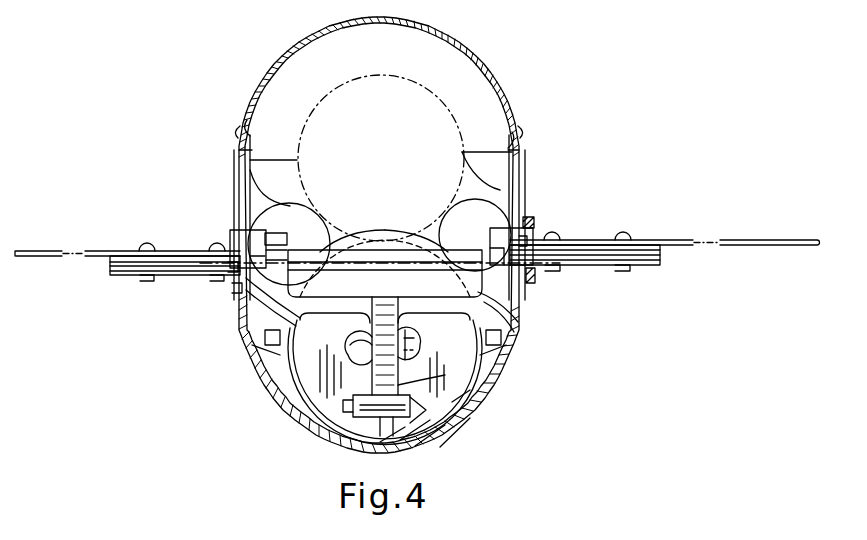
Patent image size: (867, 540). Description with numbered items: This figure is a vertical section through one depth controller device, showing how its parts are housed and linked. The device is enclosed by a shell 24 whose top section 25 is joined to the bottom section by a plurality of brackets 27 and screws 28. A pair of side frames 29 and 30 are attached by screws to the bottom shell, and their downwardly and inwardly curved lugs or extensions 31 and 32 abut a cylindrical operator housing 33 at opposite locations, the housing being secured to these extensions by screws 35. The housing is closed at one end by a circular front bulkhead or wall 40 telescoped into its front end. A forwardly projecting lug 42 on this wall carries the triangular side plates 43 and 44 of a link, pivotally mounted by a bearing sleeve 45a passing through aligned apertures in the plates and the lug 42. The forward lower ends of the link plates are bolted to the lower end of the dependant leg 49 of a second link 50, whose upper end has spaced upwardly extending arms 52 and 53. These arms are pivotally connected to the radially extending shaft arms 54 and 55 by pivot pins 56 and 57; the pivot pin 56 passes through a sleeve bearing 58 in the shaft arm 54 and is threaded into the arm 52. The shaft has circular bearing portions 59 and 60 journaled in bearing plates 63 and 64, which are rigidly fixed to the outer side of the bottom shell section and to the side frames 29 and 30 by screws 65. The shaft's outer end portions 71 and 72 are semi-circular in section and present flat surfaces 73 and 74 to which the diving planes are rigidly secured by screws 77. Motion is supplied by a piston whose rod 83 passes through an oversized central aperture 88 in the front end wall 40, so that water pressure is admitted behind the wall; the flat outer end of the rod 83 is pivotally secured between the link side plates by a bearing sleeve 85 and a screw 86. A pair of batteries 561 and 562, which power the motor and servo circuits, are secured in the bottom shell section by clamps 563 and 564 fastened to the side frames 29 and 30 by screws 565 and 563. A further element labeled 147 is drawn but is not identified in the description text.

The shell 24 is at (497, 56).
The top section 25 is at (502, 81).
The brackets 27 is at (250, 138).
The screws 28 is at (237, 136).
The side frame 29 is at (246, 306).
The side frame 30 is at (516, 292).
The lug or extension 31 is at (280, 355).
The lug or extension 32 is at (504, 350).
The operator housing 33 is at (478, 392).
The screws 35 is at (275, 333).
The front bulkhead or wall 40 is at (452, 431).
The lug 42 is at (382, 437).
The side plate 43 is at (372, 381).
The side plate 44 is at (406, 366).
The bearing sleeve 45a is at (420, 388).
The dependant leg 49 is at (365, 352).
The link 50 is at (330, 330).
The arm 52 is at (330, 226).
The arm 53 is at (470, 232).
The shaft arm 54 is at (264, 240).
The shaft arm 55 is at (500, 228).
The pivot pin 56 is at (234, 240).
The pivot pin 57 is at (313, 292).
The sleeve bearing 58 is at (282, 234).
The bearing portion 59 is at (243, 215).
The bearing portion 60 is at (528, 216).
The bearing plate 63 is at (233, 292).
The bearing plate 64 is at (536, 280).
The screws 65 is at (535, 230).
The outer end portion 71 is at (118, 272).
The outer end portion 72 is at (600, 268).
The flat surface 73 is at (124, 250).
The flat surface 74 is at (590, 236).
The screws 77 is at (160, 243).
The rod 83 is at (410, 334).
The bearing sleeve 85 is at (420, 352).
The screw 86 is at (416, 342).
The central aperture 88 is at (362, 338).
The bottom web 147 is at (405, 445).
The battery 561 is at (343, 240).
The battery 562 is at (432, 234).
The clamp 563 is at (254, 172).
The clamp 564 is at (505, 186).
The screws 565 is at (272, 153).